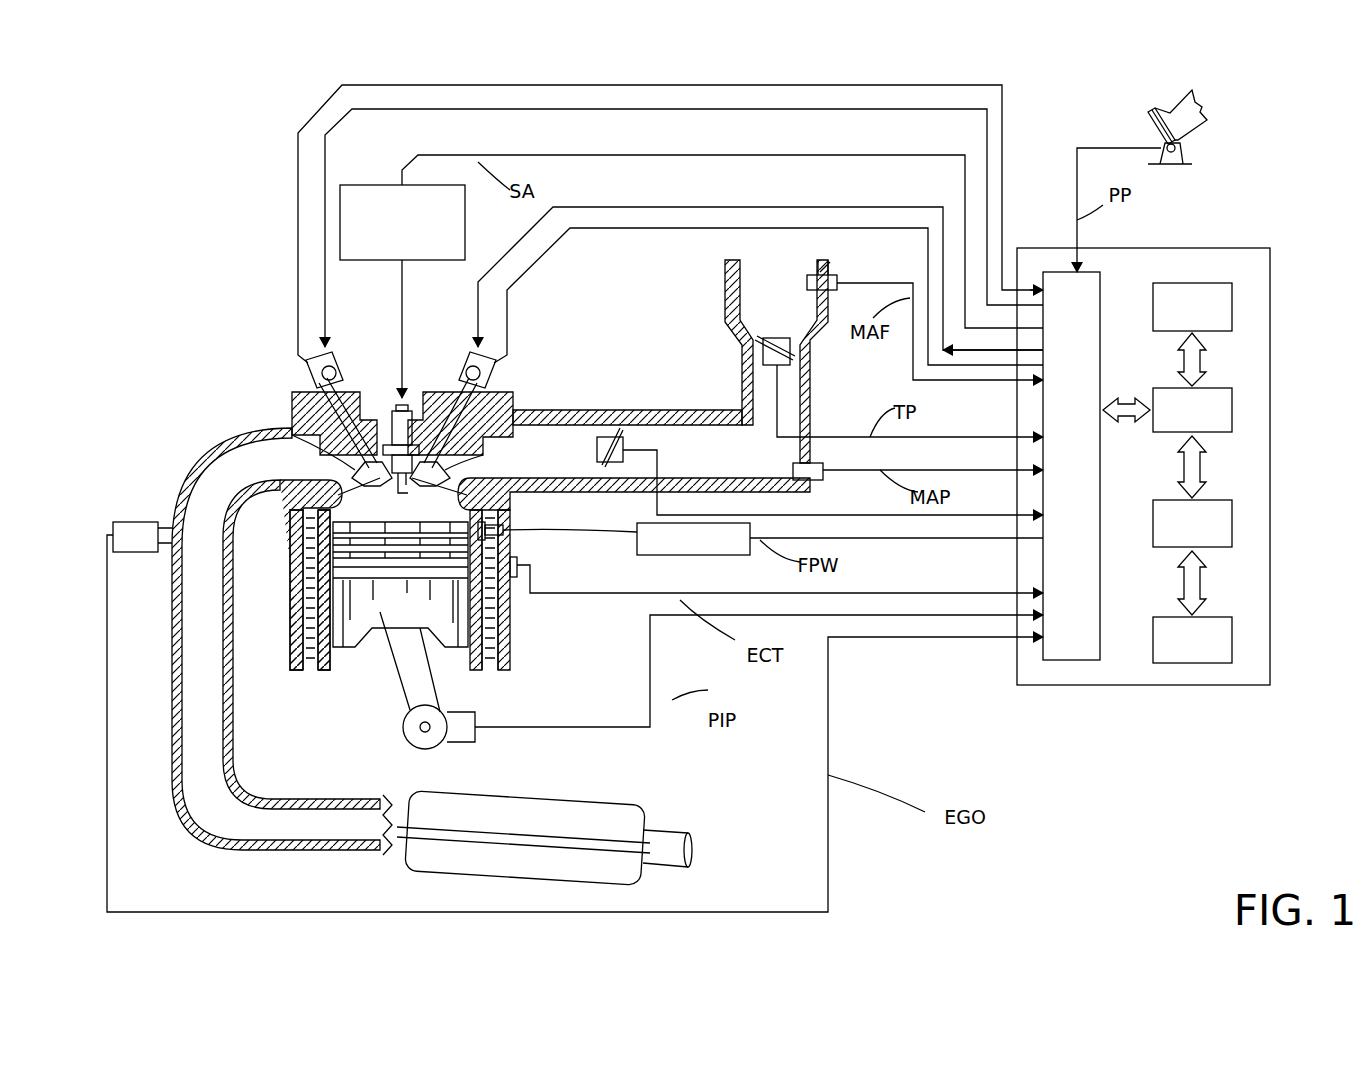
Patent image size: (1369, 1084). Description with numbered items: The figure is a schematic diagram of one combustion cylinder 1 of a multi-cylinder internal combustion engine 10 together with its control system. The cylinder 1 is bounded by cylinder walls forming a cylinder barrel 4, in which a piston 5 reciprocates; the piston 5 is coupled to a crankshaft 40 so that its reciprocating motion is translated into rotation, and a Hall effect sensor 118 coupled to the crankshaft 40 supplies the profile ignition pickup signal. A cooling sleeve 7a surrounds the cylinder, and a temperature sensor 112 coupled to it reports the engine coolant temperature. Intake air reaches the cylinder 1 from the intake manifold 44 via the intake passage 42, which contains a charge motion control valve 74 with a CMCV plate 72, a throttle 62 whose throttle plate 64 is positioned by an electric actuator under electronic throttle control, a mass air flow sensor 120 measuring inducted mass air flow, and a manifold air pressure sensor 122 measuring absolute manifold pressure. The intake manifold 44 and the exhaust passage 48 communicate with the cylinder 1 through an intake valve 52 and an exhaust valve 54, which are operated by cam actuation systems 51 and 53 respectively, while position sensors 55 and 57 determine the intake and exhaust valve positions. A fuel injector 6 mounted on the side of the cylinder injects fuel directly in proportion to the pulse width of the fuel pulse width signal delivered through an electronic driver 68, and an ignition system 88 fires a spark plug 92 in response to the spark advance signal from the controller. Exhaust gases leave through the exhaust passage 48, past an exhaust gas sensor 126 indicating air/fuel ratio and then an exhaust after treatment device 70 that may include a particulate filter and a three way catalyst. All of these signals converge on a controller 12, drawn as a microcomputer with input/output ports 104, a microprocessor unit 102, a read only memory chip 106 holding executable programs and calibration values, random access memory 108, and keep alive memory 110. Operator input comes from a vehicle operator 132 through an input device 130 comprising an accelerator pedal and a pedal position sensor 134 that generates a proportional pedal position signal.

The internal combustion engine 10 is at (222, 340).
The ignition system 88 is at (368, 185).
The spark plug 92 is at (407, 398).
The cam actuation system 53 is at (325, 345).
The cam actuation system 51 is at (470, 345).
The position sensor 57 is at (310, 375).
The position sensor 55 is at (492, 375).
The exhaust valve 54 is at (352, 470).
The intake valve 52 is at (455, 470).
The exhaust passage 48 is at (263, 473).
The intake passage 42 is at (783, 311).
The intake manifold 44 is at (711, 461).
The mass air flow sensor 120 is at (828, 272).
The throttle plate 64 is at (760, 345).
The throttle 62 is at (797, 347).
The CMCV plate 72 is at (603, 440).
The charge motion control valve 74 is at (622, 437).
The manifold air pressure sensor 122 is at (818, 480).
The combustion cylinder 1 is at (378, 502).
The fuel injector 6 is at (505, 532).
The electronic driver 68 is at (660, 556).
The temperature sensor 112 is at (519, 580).
The cooling sleeve 7a is at (492, 617).
The cylinder barrel 4 is at (335, 668).
The piston 5 is at (382, 640).
The crankshaft 40 is at (415, 748).
The Hall effect sensor 118 is at (458, 745).
The exhaust after treatment device 70 is at (600, 805).
The exhaust gas sensor 126 is at (113, 524).
The input device 130 is at (1148, 122).
The vehicle operator 132 is at (1205, 112).
The pedal position sensor 134 is at (1183, 149).
The controller 12 is at (1258, 250).
The input/output ports 104 is at (1100, 285).
The read only memory chip 106 is at (1235, 302).
The microprocessor unit 102 is at (1235, 412).
The random access memory 108 is at (1235, 522).
The keep alive memory 110 is at (1235, 640).